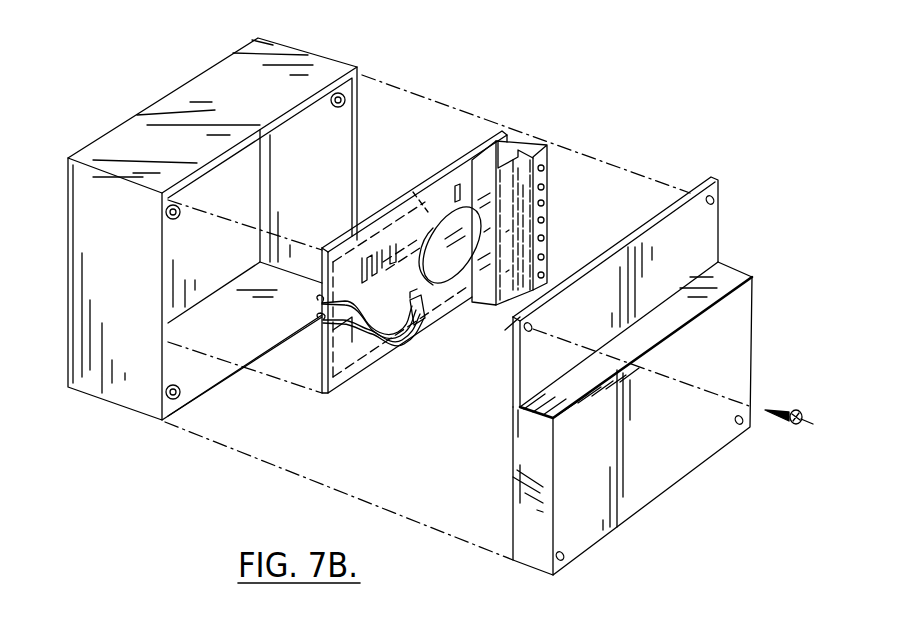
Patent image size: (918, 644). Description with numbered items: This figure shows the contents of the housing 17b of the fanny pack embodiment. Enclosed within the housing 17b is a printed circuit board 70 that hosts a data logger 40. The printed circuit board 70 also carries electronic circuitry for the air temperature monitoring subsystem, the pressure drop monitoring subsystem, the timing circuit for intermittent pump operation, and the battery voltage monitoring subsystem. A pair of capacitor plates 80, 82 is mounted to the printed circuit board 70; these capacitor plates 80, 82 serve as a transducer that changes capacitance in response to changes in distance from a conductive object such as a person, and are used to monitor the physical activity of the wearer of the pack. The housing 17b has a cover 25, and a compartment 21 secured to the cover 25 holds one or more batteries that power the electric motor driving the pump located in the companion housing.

The housing 17b is at (331, 72).
The data logger 40 is at (514, 139).
The printed circuit board 70 is at (365, 388).
The capacitor plate 80 is at (426, 217).
The capacitor plate 82 is at (443, 298).
The cover 25 is at (712, 245).
The compartment 21 is at (633, 503).